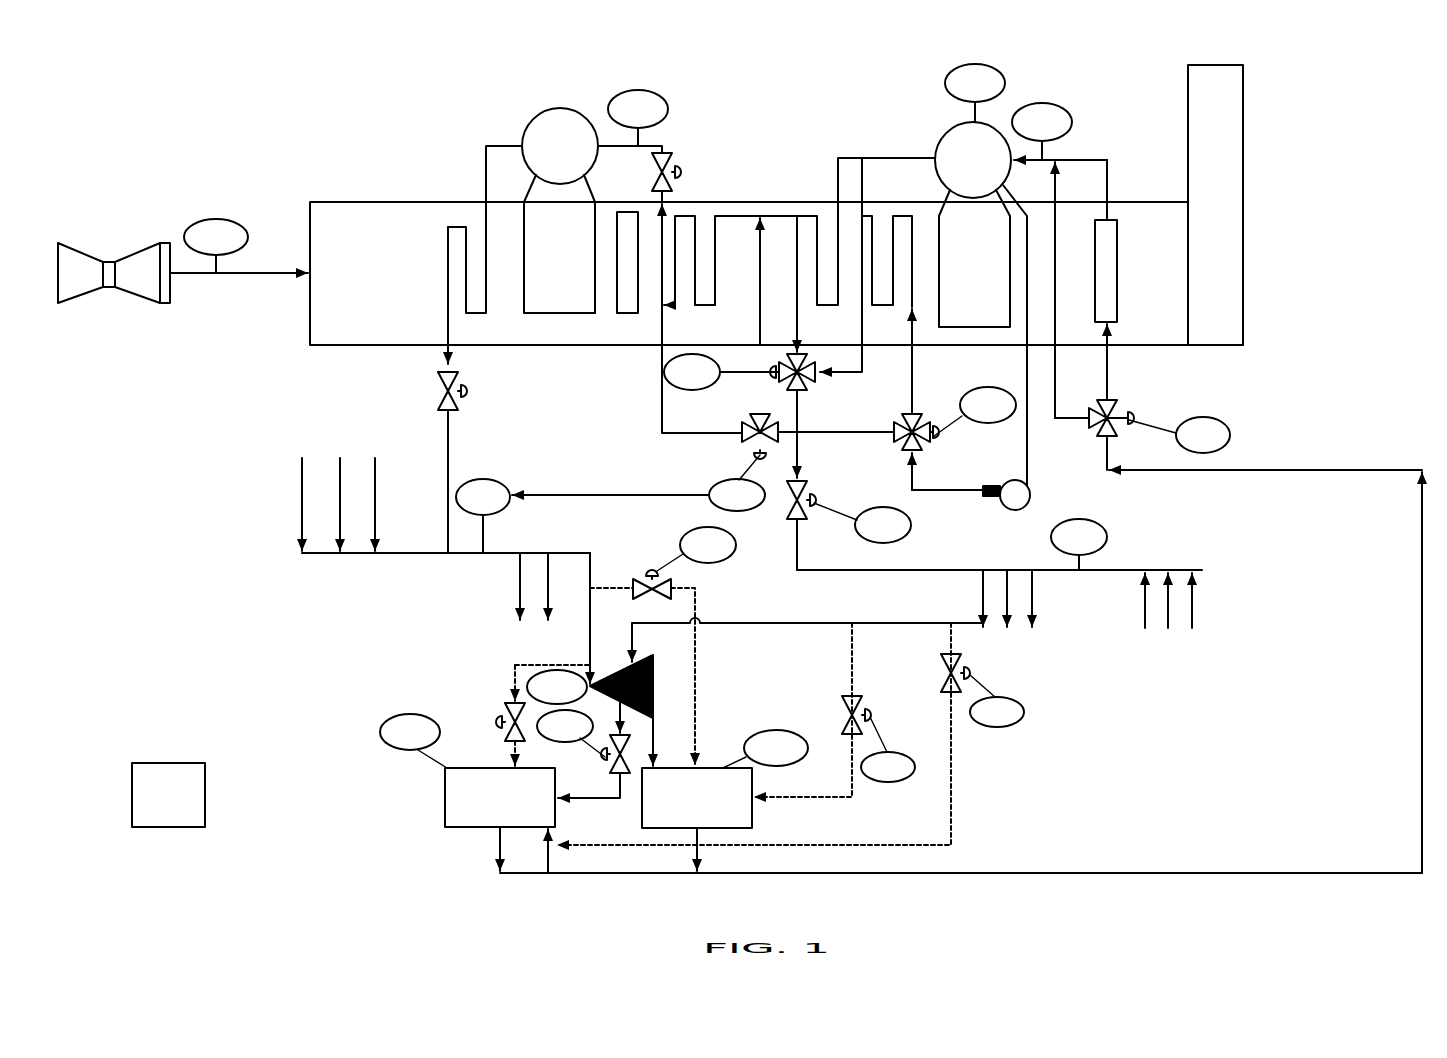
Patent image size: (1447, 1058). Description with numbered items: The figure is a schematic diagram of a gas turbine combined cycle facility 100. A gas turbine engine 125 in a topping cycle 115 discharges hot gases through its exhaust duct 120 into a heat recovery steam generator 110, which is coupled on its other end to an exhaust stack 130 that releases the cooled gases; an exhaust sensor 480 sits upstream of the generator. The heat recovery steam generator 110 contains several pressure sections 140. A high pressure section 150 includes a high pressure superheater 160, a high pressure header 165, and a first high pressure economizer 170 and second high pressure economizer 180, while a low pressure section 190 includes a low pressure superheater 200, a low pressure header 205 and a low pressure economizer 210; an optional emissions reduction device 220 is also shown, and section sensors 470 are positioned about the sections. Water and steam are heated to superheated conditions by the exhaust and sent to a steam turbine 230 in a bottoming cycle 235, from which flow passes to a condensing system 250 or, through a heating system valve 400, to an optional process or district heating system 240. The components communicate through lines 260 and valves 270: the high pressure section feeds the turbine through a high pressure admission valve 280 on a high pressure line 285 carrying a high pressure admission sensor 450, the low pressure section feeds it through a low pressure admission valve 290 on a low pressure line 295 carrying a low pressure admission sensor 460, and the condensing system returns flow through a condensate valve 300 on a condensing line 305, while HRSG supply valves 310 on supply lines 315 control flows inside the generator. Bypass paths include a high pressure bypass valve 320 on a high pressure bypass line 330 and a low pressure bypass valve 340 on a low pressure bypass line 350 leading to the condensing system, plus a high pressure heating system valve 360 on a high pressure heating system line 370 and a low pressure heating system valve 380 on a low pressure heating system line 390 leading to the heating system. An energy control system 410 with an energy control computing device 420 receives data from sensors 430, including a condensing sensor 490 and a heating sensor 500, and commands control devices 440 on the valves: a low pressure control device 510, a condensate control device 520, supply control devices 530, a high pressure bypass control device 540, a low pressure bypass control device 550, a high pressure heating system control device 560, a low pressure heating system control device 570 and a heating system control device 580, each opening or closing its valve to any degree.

The gas turbine combined cycle facility 100 is at (156, 80).
The heat recovery steam generator 110 is at (718, 256).
The topping cycle 115 is at (333, 198).
The exhaust duct 120 is at (183, 278).
The gas turbine engine 125 is at (137, 250).
The exhaust stack 130 is at (1243, 110).
The pressure sections 140 is at (447, 200).
The high pressure section 150 is at (523, 200).
The high pressure superheater 160 is at (447, 270).
The high pressure header 165 is at (541, 112).
The first high pressure economizer 170 is at (715, 262).
The second high pressure economizer 180 is at (893, 215).
The low pressure section 190 is at (936, 213).
The low pressure superheater 200 is at (797, 335).
The low pressure header 205 is at (960, 124).
The low pressure economizer 210 is at (1118, 268).
The emissions reduction device 220 is at (626, 313).
The steam turbine 230 is at (687, 686).
The bottoming cycle 235 is at (658, 688).
The heating system 240 is at (458, 828).
The condensing system 250 is at (752, 826).
The lines 260 is at (347, 556).
The valves 270 is at (422, 392).
The high pressure admission valve 280 is at (440, 410).
The high pressure line 285 is at (447, 445).
The low pressure admission valve 290 is at (792, 520).
The low pressure line 295 is at (800, 462).
The condensate valve 300 is at (1115, 398).
The condensing line 305 is at (1108, 370).
The HRSG supply valves 310 is at (676, 152).
The supply lines 315 is at (661, 147).
The high pressure bypass valve 320 is at (668, 598).
The high pressure bypass line 330 is at (698, 602).
The low pressure bypass valve 340 is at (858, 698).
The low pressure bypass line 350 is at (855, 648).
The high pressure heating system valve 360 is at (508, 741).
The high pressure heating system line 370 is at (524, 711).
The low pressure heating system valve 380 is at (955, 658).
The low pressure heating system line 390 is at (952, 832).
The heating system valve 400 is at (618, 775).
The energy control system 410 is at (136, 784).
The energy control computing device 420 is at (168, 795).
The sensors 430 is at (489, 476).
The control devices 440 is at (913, 515).
The high pressure admission sensor 450 is at (500, 512).
The low pressure admission sensor 460 is at (1102, 530).
The section sensors 470 is at (656, 93).
The exhaust sensor 480 is at (206, 222).
The condensing sensor 490 is at (773, 731).
The heating sensor 500 is at (408, 714).
The low pressure control device 510 is at (883, 507).
The condensate control device 520 is at (1228, 428).
The supply control devices 530 is at (681, 388).
The high pressure bypass control device 540 is at (724, 560).
The low pressure bypass control device 550 is at (888, 783).
The high pressure heating system control device 560 is at (579, 704).
The low pressure heating system control device 570 is at (1022, 712).
The heating system control device 580 is at (563, 742).